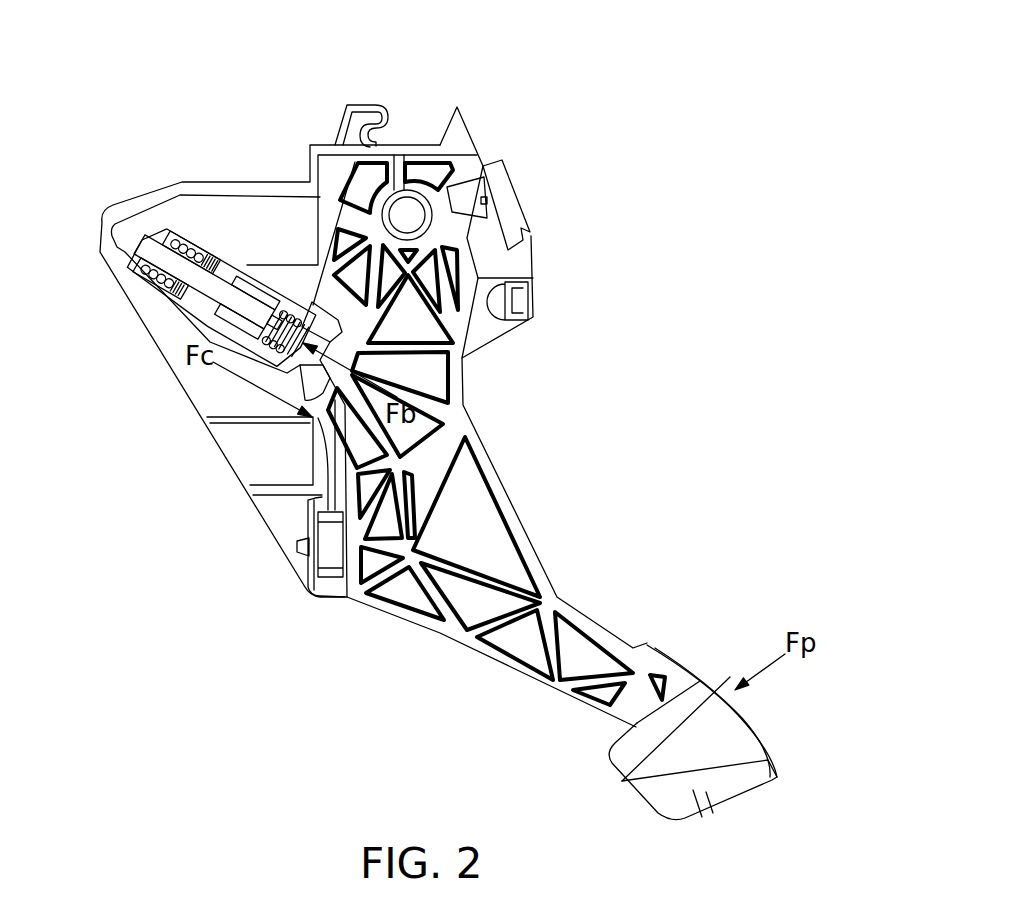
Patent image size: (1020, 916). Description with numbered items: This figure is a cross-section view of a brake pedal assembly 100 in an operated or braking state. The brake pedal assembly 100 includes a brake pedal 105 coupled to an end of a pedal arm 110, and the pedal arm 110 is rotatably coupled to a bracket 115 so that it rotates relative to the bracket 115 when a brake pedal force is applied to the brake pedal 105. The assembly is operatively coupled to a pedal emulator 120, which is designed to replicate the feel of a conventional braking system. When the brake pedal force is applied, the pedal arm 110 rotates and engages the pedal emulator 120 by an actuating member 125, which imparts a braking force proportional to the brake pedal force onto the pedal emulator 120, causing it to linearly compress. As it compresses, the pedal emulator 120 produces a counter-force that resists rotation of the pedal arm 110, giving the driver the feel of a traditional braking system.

The brake pedal assembly 100 is at (636, 58).
The brake pedal 105 is at (755, 720).
The pedal arm 110 is at (508, 497).
The bracket 115 is at (224, 182).
The pedal emulator 120 is at (143, 292).
The actuating member 125 is at (313, 350).